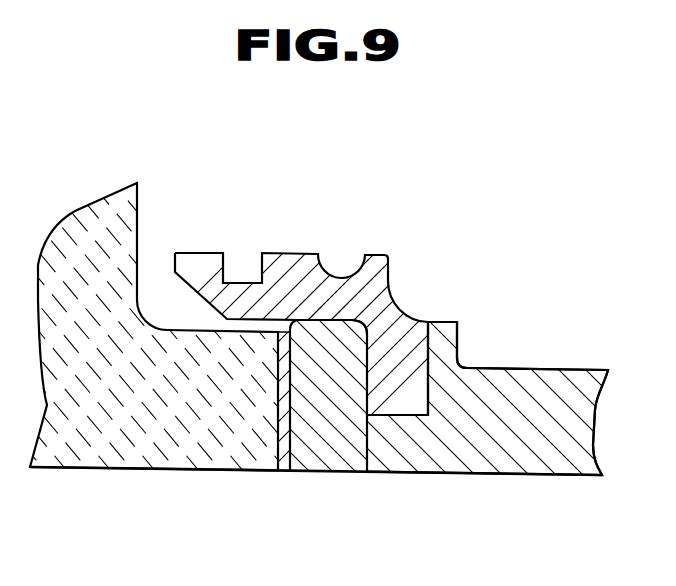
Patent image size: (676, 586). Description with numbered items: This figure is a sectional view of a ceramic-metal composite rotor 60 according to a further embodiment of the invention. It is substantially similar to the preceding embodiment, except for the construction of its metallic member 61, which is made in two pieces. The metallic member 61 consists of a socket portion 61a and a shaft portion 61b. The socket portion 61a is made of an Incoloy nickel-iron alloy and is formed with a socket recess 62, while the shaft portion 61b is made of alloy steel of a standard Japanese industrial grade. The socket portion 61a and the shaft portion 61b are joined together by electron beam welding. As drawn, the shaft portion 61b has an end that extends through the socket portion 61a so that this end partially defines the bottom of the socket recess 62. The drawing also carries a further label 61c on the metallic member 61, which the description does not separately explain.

The ceramic-metal composite rotor 60 is at (325, 195).
The metallic member 61 is at (413, 341).
The socket portion 61a is at (386, 256).
The shaft portion 61b is at (565, 380).
The lower seal portion 61c is at (455, 465).
The socket recess 62 is at (360, 465).